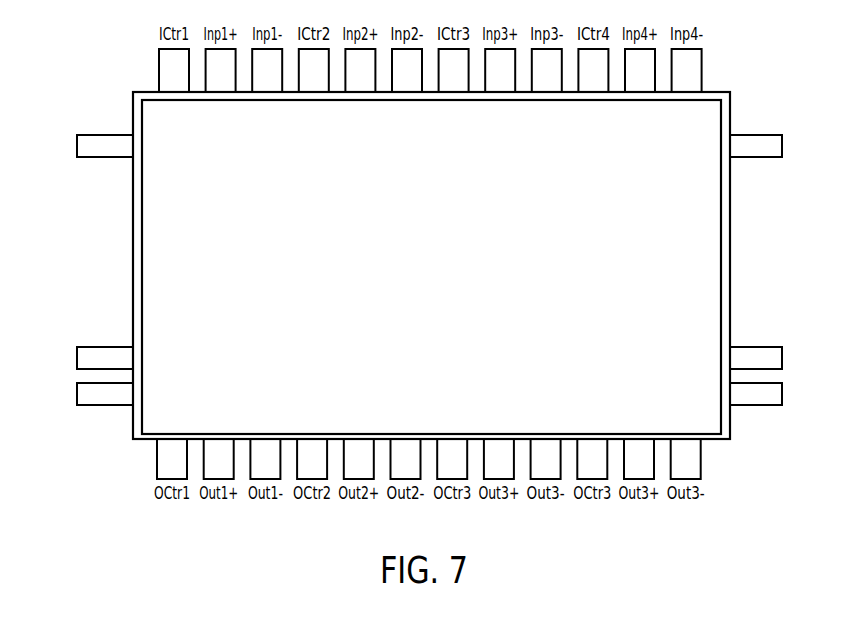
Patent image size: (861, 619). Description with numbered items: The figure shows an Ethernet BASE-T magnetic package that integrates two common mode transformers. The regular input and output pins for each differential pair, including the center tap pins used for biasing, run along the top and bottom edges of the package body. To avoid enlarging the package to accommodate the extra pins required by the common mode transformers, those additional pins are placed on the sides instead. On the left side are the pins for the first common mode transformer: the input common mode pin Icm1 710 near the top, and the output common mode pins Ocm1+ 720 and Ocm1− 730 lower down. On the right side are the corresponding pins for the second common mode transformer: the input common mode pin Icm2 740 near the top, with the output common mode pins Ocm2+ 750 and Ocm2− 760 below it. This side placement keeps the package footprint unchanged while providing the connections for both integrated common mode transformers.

The Icm1 pin 710 is at (56, 130).
The Ocm1+ pin 720 is at (46, 342).
The Ocm1− pin 730 is at (40, 410).
The Icm2 pin 740 is at (803, 130).
The Ocm2+ pin 750 is at (811, 342).
The Ocm2− pin 760 is at (802, 410).